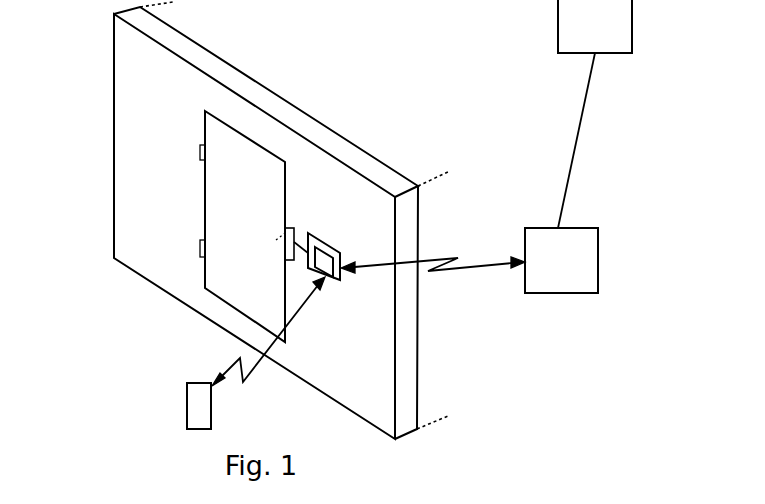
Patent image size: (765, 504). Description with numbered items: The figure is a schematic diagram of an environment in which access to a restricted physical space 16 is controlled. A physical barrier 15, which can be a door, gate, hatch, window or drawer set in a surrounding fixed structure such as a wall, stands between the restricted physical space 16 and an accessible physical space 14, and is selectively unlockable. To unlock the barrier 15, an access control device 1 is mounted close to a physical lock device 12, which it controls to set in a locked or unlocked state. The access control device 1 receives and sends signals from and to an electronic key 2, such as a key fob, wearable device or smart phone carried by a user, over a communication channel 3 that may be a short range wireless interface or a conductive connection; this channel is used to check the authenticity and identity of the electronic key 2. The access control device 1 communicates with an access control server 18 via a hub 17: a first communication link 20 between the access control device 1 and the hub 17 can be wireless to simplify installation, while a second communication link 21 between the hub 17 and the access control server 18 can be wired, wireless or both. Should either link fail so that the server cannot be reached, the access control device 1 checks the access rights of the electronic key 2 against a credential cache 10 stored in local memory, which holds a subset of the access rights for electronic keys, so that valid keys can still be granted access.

The access control device 1 is at (336, 248).
The electronic key 2 is at (187, 395).
The communication channel 3 is at (248, 370).
The credential cache 10 is at (340, 280).
The physical lock device 12 is at (292, 228).
The accessible physical space 14 is at (70, 133).
The physical barrier 15 is at (228, 219).
The physical space 16 is at (363, 107).
The hub 17 is at (549, 274).
The access control server 18 is at (582, 34).
The first communication link 20 is at (477, 268).
The second communication link 21 is at (575, 145).